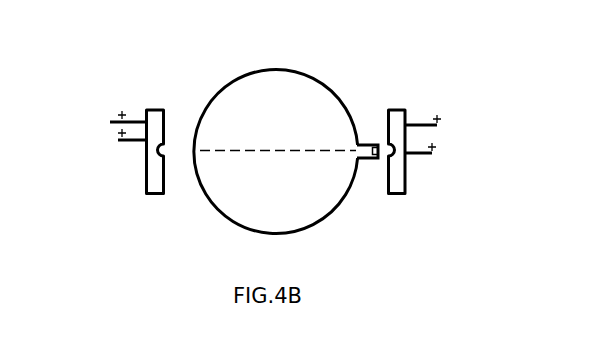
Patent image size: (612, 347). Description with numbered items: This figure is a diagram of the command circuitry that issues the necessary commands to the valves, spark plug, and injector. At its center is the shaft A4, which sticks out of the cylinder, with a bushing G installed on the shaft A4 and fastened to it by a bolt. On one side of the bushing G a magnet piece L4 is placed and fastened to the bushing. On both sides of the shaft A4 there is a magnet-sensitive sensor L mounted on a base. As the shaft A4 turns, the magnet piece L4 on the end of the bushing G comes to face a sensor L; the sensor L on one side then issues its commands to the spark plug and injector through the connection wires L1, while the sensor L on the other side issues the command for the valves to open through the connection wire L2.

The shaft A4 is at (269, 125).
The magnet piece L4 is at (333, 95).
The bushing G is at (388, 207).
The sensor L is at (270, 186).
The connection wires L1 is at (95, 150).
The connection wire L2 is at (456, 169).